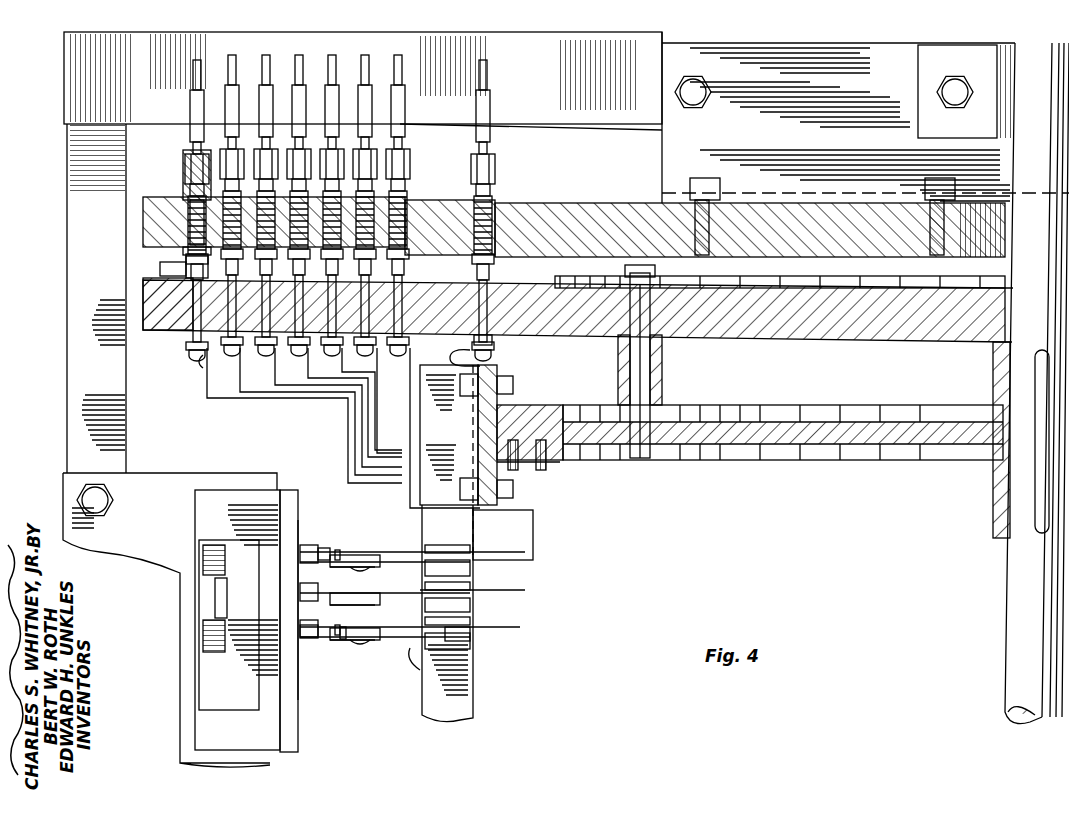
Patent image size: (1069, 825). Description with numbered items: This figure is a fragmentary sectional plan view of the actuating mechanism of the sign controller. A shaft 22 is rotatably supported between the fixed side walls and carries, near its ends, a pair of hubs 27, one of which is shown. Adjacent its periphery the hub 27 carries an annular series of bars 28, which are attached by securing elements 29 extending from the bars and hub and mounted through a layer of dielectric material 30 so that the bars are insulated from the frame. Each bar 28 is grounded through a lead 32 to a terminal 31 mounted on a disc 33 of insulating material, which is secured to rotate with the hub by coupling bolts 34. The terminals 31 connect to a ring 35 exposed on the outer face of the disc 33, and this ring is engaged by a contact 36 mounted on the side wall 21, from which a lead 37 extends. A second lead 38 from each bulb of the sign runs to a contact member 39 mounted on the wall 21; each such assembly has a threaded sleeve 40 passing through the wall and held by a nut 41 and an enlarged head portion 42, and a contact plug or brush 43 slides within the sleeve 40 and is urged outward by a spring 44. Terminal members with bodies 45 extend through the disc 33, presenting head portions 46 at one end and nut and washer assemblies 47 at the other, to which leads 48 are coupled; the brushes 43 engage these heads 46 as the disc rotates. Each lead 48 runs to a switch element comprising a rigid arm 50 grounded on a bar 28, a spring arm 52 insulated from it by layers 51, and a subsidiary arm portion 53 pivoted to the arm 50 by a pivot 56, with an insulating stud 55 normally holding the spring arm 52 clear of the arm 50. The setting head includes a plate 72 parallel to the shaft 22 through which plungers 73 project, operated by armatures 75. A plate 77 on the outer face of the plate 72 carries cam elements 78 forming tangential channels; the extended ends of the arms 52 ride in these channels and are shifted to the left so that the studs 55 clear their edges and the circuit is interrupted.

The side wall 21 is at (600, 215).
The shaft 22 is at (1006, 652).
The hub 27 is at (745, 445).
The bar 28 is at (470, 528).
The securing element 29 is at (560, 462).
The layer of dielectric material 30 is at (497, 400).
The terminal 31 is at (490, 320).
The lead 32 is at (452, 356).
The disc of insulating material 33 is at (780, 336).
The coupling bolt 34 is at (648, 378).
The ring 35 is at (490, 272).
The contact 36 is at (493, 210).
The lead 37 is at (490, 105).
The lead 38 is at (332, 62).
The contact member 39 is at (185, 230).
The threaded sleeve 40 is at (190, 210).
The nut 41 is at (186, 268).
The enlarged head portion 42 is at (190, 205).
The contact plug or brush 43 is at (183, 250).
The spring 44 is at (183, 180).
The terminal body 45 is at (170, 332).
The head portion 46 is at (165, 276).
The nut and washer assembly 47 is at (339, 428).
The lead 48 is at (500, 595).
The rigid arm 50 is at (405, 650).
The insulating layer 51 is at (450, 630).
The spring arm 52 is at (395, 640).
The subsidiary arm portion 53 is at (342, 642).
The insulating stud 55 is at (340, 555).
The pivot 56 is at (365, 565).
The plate 72 is at (298, 742).
The plunger 73 is at (318, 640).
The armature 75 is at (200, 633).
The plate 77 is at (300, 545).
The cam element 78 is at (322, 552).